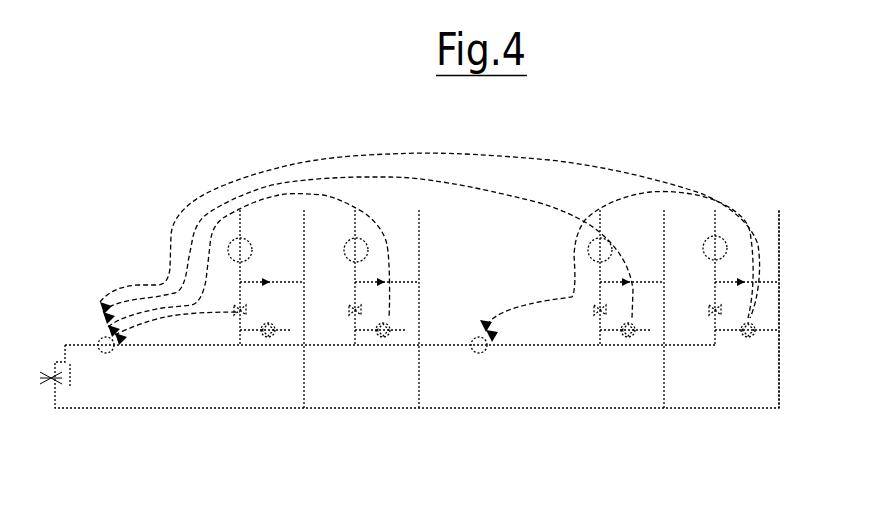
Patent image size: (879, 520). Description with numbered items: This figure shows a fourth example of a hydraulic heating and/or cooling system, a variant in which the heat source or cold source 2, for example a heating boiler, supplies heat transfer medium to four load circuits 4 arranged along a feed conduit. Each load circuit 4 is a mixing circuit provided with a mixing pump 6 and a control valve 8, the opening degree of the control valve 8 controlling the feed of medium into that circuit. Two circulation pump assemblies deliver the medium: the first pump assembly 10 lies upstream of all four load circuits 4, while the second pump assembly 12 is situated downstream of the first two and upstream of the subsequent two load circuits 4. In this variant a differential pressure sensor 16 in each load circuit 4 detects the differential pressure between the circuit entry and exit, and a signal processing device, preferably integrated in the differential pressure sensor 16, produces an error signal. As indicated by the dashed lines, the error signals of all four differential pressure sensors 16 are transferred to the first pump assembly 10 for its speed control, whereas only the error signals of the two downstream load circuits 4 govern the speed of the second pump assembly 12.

The heat source or cold source 2 is at (62, 381).
The load circuit 4 is at (760, 226).
The mixing pump 6 is at (250, 257).
The control valve 8 is at (246, 313).
The first pump assembly 10 is at (100, 355).
The second pump assembly 12 is at (482, 354).
The differential pressure sensor 16 is at (264, 344).